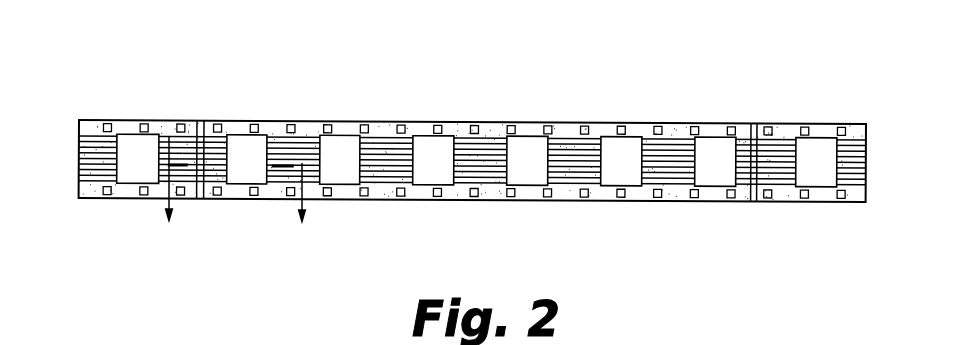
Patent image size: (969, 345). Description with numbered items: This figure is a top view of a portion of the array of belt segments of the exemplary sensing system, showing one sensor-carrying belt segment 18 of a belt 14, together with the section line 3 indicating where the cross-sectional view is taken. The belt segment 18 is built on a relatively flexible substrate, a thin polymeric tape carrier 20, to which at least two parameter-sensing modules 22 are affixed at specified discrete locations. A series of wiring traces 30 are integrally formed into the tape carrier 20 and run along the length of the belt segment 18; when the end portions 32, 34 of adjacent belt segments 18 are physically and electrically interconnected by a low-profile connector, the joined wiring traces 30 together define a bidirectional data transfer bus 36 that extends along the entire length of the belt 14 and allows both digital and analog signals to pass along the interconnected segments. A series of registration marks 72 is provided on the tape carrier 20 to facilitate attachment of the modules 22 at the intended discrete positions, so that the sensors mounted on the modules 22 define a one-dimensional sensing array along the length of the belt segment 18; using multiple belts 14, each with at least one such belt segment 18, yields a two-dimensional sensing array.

The belt 14 is at (471, 133).
The belt segment 18 is at (96, 120).
The tape carrier 20 is at (563, 137).
The parameter-sensing module 22 is at (714, 137).
The wiring traces 30 is at (426, 126).
The end portion 32 is at (197, 199).
The end portion 34 is at (753, 125).
The bidirectional data transfer bus 36 is at (171, 127).
The registration marks 72 is at (325, 126).
The section line 3- 3 is at (235, 211).